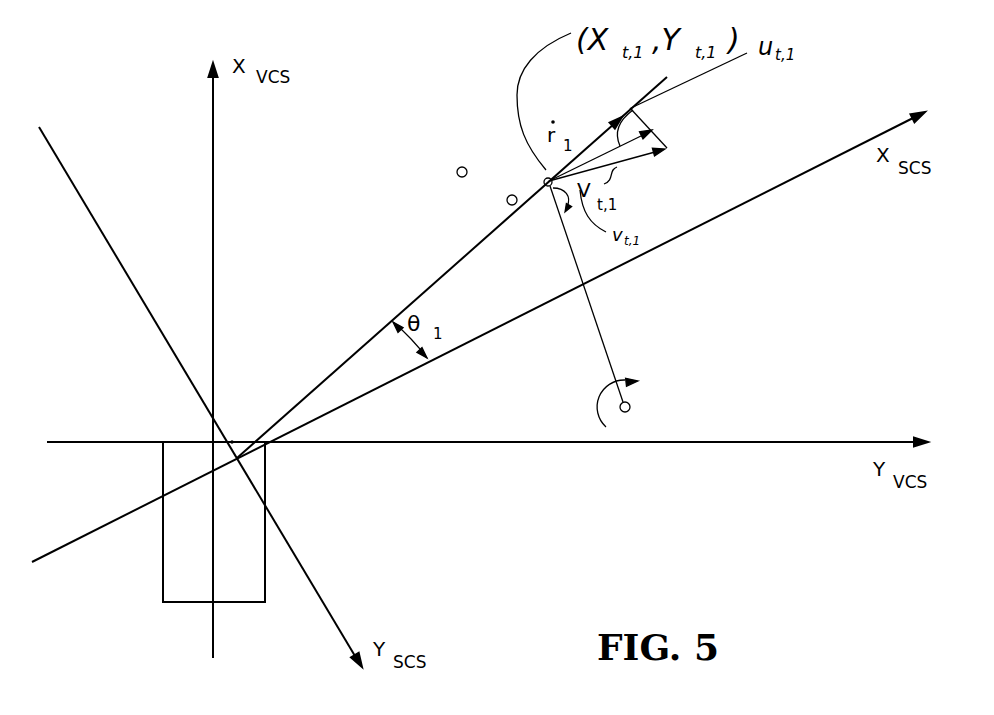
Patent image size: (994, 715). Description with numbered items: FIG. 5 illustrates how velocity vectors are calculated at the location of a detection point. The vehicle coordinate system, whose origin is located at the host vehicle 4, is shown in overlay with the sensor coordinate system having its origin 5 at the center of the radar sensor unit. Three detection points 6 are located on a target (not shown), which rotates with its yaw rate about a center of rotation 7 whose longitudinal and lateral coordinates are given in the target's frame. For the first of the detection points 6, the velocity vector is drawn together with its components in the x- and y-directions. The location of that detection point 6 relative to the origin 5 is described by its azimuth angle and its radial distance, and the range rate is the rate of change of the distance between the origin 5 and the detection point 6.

The host vehicle 4 is at (163, 577).
The origin of the sensor coordinate system 5 is at (231, 442).
The detection points 6 is at (545, 178).
The center of rotation 7 is at (634, 401).